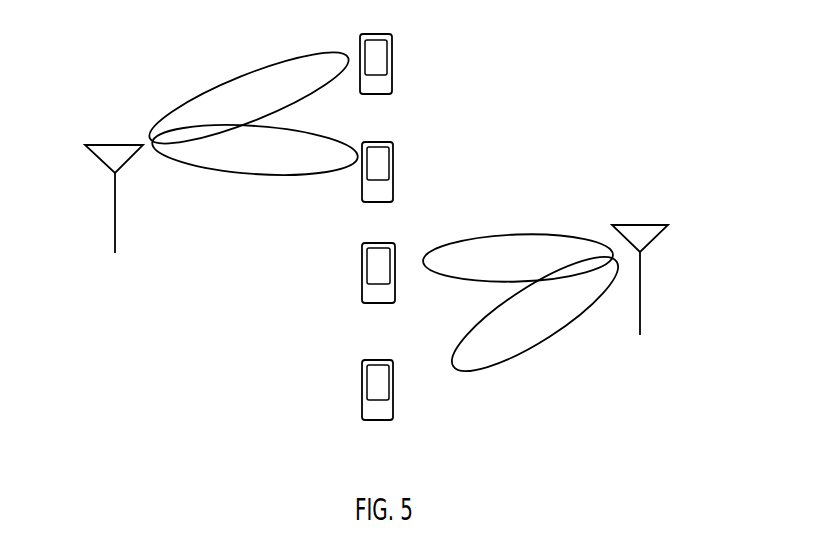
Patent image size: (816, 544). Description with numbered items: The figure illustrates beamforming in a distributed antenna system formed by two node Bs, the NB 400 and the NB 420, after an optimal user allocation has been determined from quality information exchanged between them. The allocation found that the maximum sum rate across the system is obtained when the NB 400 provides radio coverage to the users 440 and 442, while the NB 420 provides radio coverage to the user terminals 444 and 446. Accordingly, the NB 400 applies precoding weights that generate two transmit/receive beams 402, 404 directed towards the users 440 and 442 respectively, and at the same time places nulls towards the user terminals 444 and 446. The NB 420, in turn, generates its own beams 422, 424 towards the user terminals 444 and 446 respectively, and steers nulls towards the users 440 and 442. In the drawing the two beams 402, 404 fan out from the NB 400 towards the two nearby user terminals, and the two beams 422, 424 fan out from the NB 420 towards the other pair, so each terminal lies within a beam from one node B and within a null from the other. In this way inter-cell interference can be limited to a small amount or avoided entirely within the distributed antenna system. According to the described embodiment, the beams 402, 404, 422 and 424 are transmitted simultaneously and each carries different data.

The NB 400 is at (115, 208).
The transmit/receive beam 402 is at (235, 78).
The transmit/receive beam 404 is at (240, 172).
The NB 420 is at (640, 289).
The beam 422 is at (490, 237).
The beam 424 is at (533, 340).
The user 440 is at (392, 57).
The user 442 is at (393, 150).
The user terminal 444 is at (362, 287).
The user terminal 446 is at (362, 403).